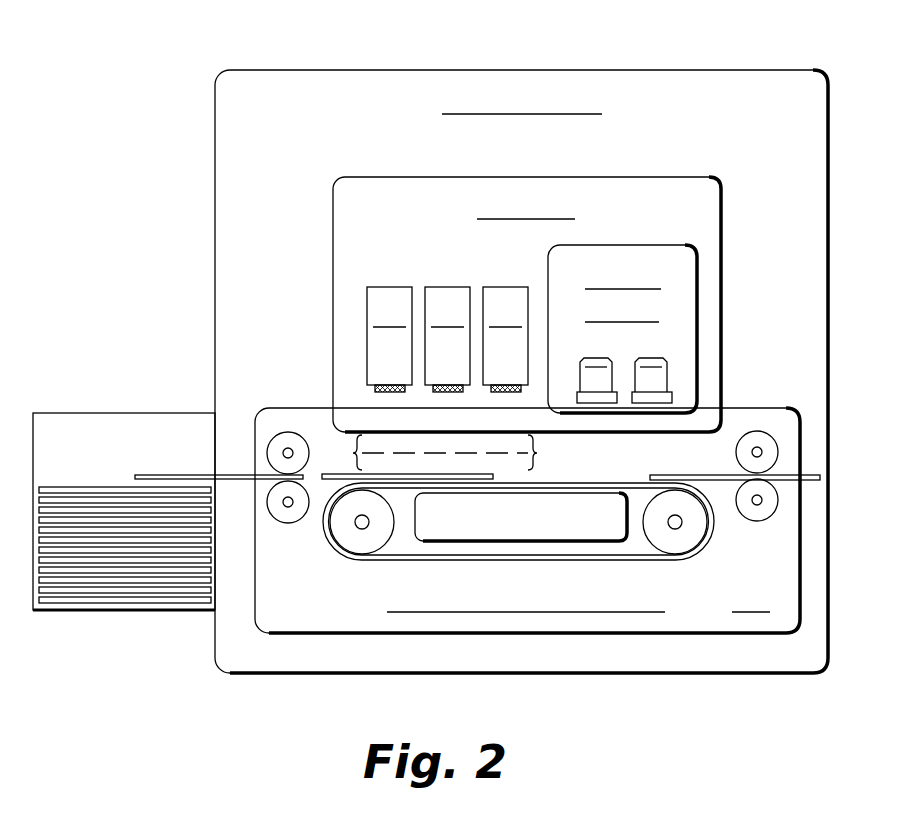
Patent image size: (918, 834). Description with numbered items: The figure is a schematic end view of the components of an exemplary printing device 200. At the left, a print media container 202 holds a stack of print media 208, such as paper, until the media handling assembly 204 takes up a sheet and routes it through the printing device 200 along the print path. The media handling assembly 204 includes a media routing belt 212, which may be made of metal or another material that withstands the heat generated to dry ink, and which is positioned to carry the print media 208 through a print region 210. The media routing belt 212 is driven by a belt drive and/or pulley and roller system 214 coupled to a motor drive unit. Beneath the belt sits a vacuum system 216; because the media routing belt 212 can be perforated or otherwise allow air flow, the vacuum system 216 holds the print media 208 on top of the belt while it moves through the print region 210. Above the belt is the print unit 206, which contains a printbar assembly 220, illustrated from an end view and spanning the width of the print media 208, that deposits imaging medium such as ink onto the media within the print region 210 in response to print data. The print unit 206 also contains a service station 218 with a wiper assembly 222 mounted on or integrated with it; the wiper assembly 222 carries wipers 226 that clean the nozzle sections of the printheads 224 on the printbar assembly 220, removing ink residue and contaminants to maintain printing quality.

The printing device 200 is at (520, 70).
The print media container 202 is at (93, 446).
The media handling assembly 204 is at (537, 520).
The print unit 206 is at (637, 177).
The print media 208 is at (185, 473).
The print region 210 is at (377, 453).
The media routing belt 212 is at (378, 562).
The belt drive and/or pulley and roller system 214 is at (360, 540).
The vacuum system 216 is at (543, 493).
The service station 218 is at (610, 245).
The printbar assembly 220 is at (380, 285).
The wiper assembly 222 is at (672, 385).
The printheads 224 is at (393, 385).
The wipers 226 is at (662, 358).